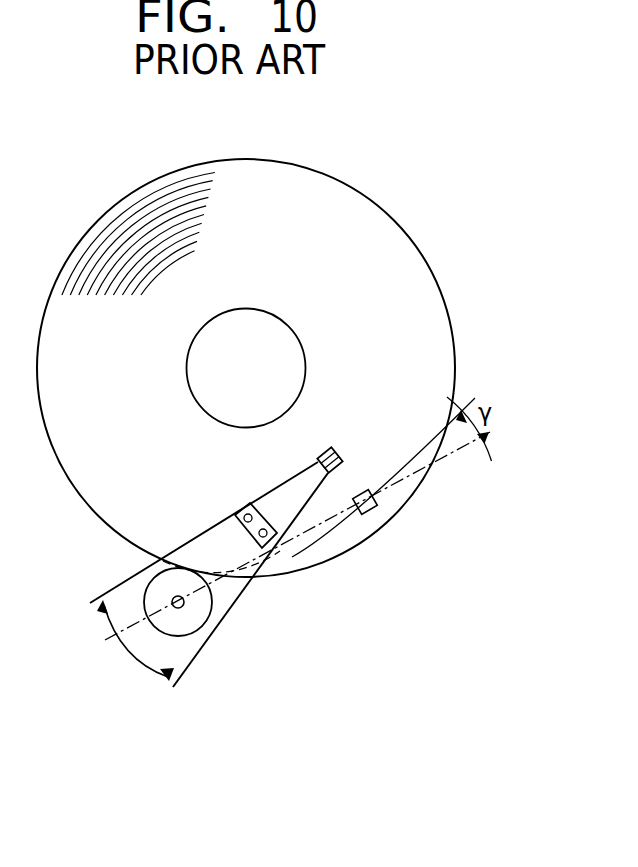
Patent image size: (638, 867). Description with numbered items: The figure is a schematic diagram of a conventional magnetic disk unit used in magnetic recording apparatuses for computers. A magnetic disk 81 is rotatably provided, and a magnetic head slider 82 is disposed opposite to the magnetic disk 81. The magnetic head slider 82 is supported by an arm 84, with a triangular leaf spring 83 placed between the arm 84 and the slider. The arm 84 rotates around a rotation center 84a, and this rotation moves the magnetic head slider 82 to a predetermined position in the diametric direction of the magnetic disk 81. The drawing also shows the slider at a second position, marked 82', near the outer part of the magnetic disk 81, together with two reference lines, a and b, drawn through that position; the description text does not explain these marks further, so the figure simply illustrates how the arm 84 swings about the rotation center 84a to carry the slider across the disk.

The magnetic disk 81 is at (410, 262).
The magnetic head slider 82 is at (337, 428).
The magnetic head at outer position 82' is at (377, 469).
The triangular leaf spring 83 is at (284, 486).
The arm 84 is at (222, 550).
The rotation center 84a is at (200, 612).
The arm center line a is at (440, 462).
The track tangent line b is at (437, 438).